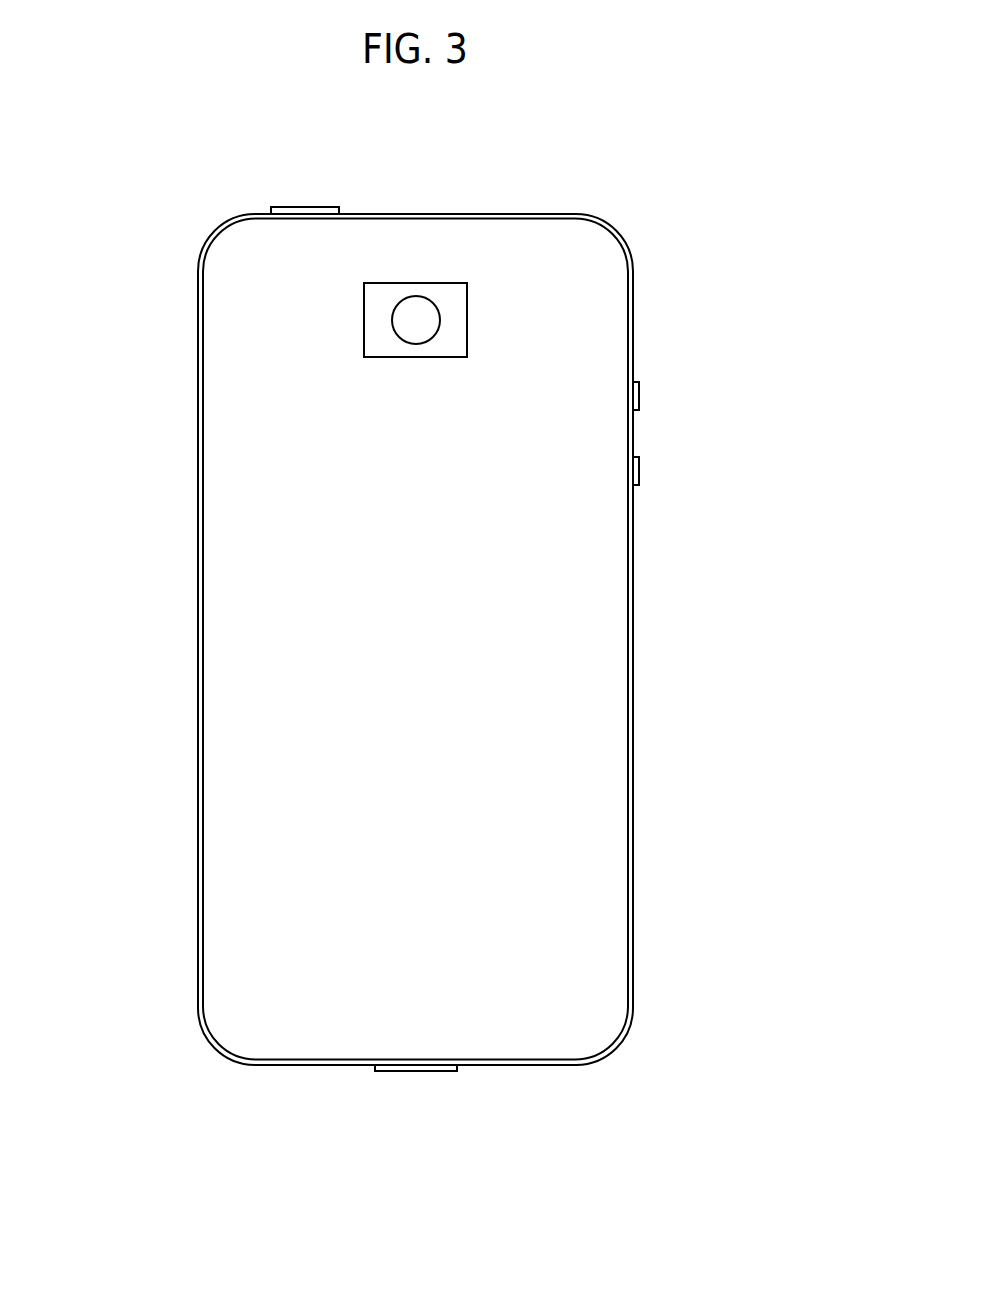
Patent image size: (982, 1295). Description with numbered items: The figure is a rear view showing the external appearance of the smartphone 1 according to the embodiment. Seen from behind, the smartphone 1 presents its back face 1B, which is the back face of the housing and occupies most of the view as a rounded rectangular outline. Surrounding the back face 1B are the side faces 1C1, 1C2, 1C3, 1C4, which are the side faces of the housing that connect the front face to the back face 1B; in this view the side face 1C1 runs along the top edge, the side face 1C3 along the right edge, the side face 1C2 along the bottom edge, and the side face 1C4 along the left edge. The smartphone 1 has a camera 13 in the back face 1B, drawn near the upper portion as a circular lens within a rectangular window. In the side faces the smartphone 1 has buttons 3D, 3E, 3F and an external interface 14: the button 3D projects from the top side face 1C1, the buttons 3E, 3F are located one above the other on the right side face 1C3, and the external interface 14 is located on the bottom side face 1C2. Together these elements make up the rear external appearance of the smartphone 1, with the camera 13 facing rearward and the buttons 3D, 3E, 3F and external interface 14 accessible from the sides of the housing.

The smartphone 1 is at (677, 242).
The back face 1B is at (230, 513).
The side face 1C1 is at (515, 213).
The side face 1C2 is at (524, 1066).
The side face 1C3 is at (633, 731).
The side face 1C4 is at (198, 658).
The button 3D is at (300, 207).
The button 3E is at (640, 398).
The button 3F is at (640, 472).
The camera 13 is at (418, 312).
The external interface 14 is at (414, 1075).